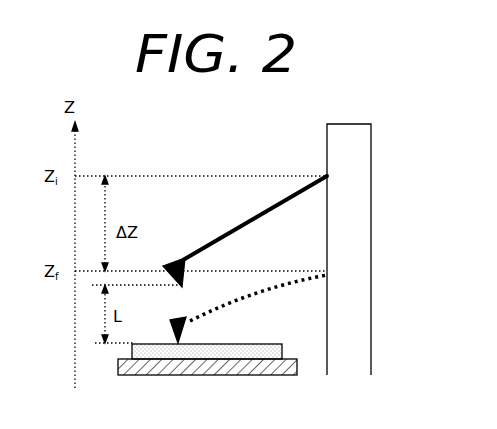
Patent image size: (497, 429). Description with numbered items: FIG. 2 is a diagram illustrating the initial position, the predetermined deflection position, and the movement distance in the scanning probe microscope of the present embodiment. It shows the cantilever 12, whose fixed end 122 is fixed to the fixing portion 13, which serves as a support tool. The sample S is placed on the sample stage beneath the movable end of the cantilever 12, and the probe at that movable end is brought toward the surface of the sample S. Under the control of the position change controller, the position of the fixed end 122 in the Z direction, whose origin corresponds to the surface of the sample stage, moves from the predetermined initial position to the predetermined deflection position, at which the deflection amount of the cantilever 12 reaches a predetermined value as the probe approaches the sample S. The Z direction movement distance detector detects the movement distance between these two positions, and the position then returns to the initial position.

The cantilever 12 is at (240, 227).
The fixing portion 13 is at (356, 197).
The fixed end 122 is at (327, 176).
The sample S is at (263, 348).